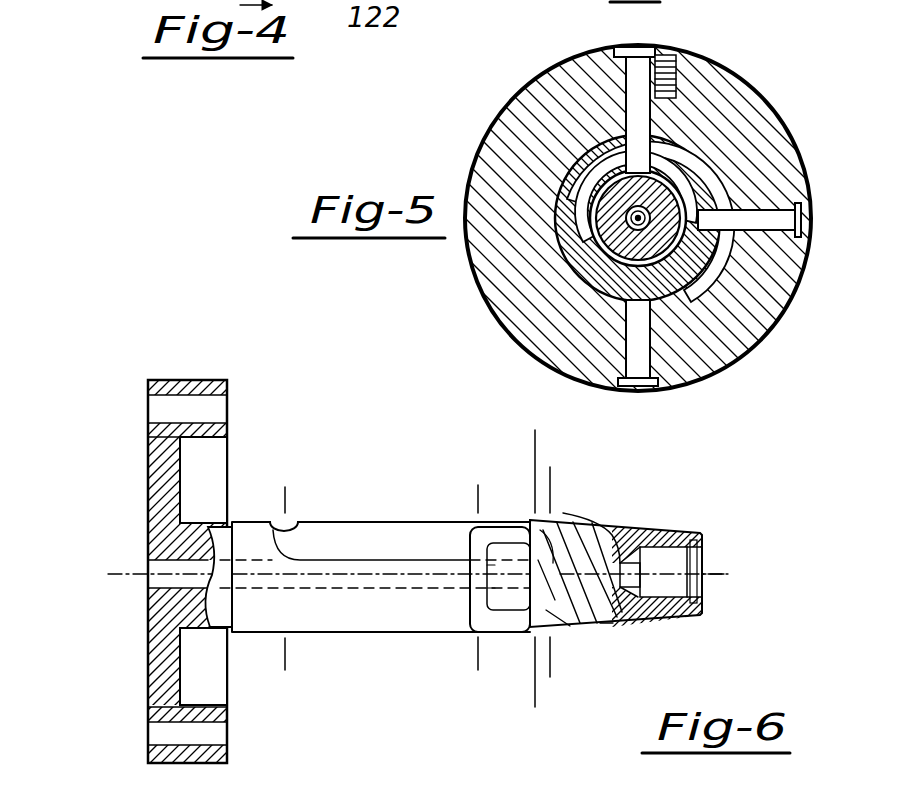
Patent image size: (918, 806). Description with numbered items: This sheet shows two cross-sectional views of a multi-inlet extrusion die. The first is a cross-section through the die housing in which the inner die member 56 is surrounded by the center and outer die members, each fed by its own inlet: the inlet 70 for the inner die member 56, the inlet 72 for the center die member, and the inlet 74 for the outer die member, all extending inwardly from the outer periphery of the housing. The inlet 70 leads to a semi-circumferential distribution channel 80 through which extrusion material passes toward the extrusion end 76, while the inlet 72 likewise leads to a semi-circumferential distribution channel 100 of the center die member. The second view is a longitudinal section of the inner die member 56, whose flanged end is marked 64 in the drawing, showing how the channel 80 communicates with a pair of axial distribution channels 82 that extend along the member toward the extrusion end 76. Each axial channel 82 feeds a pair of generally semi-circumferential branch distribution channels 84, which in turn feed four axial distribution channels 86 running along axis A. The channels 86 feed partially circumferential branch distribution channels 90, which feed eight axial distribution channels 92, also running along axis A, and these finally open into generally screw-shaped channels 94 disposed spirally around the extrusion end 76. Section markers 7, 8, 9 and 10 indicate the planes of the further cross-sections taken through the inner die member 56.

In FIG. 5, the inlet 70 is at (641, 47).
In FIG. 5, the inlet 72 is at (812, 218).
In FIG. 5, the inlet 74 is at (647, 386).
In FIG. 5, the semi-circumferential distribution channel 80 is at (558, 168).
In FIG. 6, the semi-circumferential distribution channel 80 is at (277, 540).
In FIG. 5, the axial distribution channels 82 is at (485, 149).
In FIG. 6, the axial distribution channels 82 is at (349, 561).
In FIG. 5, the semi-circumferential distribution channel 100 is at (806, 256).
In FIG. 6, the flange 64 is at (157, 452).
In FIG. 6, the inner die member 56 is at (342, 623).
In FIG. 6, the branch distribution channels 84 is at (470, 537).
In FIG. 6, the axial distribution channels 86 is at (512, 606).
In FIG. 6, the extrusion end 76 is at (630, 522).
In FIG. 6, the branch distribution channels 90 is at (540, 540).
In FIG. 6, the axial distribution channels 92 is at (613, 623).
In FIG. 6, the screw-shaped channels 94 is at (688, 533).
In FIG. 6, the axis A is at (710, 567).
In FIG. 6, the section line 7- 7 is at (555, 475).
In FIG. 6, the section line 8- 8 is at (540, 452).
In FIG. 6, the section line 9- 9 is at (483, 498).
In FIG. 6, the section line 10- 10 is at (280, 498).